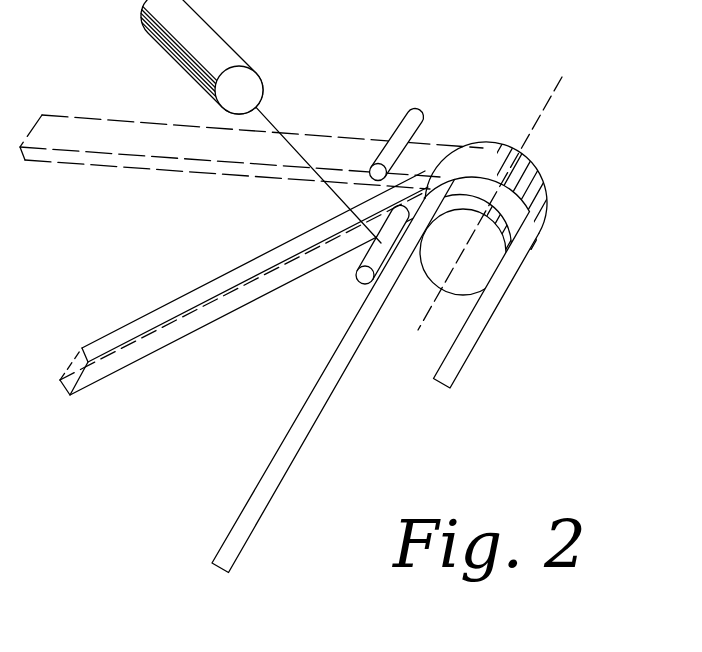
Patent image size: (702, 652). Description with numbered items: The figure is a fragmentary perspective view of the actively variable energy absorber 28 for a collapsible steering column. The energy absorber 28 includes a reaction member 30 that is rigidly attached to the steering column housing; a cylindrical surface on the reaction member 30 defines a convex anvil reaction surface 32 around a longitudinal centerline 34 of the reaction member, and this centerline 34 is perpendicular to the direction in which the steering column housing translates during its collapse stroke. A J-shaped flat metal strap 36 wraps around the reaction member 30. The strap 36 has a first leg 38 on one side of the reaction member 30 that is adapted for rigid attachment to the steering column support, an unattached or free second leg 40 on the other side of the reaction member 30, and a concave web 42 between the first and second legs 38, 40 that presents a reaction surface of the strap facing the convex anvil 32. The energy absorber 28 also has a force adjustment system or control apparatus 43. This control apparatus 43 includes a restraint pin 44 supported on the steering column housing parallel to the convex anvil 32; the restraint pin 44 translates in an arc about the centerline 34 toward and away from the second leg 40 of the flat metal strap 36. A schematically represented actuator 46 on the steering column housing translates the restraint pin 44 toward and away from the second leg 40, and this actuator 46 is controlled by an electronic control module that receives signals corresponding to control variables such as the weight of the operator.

The actively variable energy absorber 28 is at (384, 104).
The reaction member 30 is at (455, 297).
The convex anvil reaction surface 32 is at (505, 227).
The longitudinal centerline 34 is at (540, 117).
The J-shaped flat metal strap 36 is at (386, 334).
The first leg 38 is at (483, 340).
The second leg 40 is at (252, 533).
The concave web 42 is at (543, 207).
The force adjustment system 43 is at (265, 64).
The restraint pin 44 is at (356, 282).
The actuator 46 is at (165, 36).